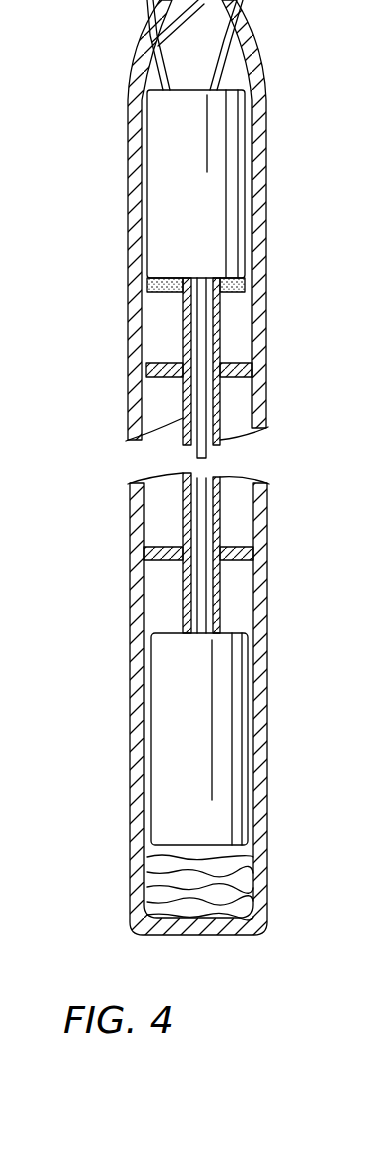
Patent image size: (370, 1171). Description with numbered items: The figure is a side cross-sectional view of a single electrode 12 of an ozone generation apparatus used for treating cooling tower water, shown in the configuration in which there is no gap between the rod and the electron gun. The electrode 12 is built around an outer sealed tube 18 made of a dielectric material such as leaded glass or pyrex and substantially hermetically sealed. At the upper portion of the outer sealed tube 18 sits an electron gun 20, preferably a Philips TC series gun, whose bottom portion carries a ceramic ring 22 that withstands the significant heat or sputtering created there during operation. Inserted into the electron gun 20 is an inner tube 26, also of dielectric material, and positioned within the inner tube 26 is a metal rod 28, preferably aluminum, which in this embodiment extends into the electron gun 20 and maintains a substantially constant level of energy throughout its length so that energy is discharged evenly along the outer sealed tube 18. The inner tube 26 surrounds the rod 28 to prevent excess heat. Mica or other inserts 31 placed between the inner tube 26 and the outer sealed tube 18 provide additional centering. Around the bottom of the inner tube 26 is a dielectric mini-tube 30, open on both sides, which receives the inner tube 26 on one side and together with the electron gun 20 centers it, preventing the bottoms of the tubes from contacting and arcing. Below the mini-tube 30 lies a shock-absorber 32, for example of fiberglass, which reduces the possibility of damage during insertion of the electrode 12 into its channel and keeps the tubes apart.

The electrode 12 is at (117, 218).
The outer sealed tube 18 is at (265, 333).
The electron gun 20 is at (147, 140).
The ceramic ring 22 is at (244, 280).
The inner tube 26 is at (212, 412).
The rod 28 is at (200, 366).
The mini-tube 30 is at (237, 678).
The inserts 31 is at (190, 368).
The shock-absorber 32 is at (162, 880).